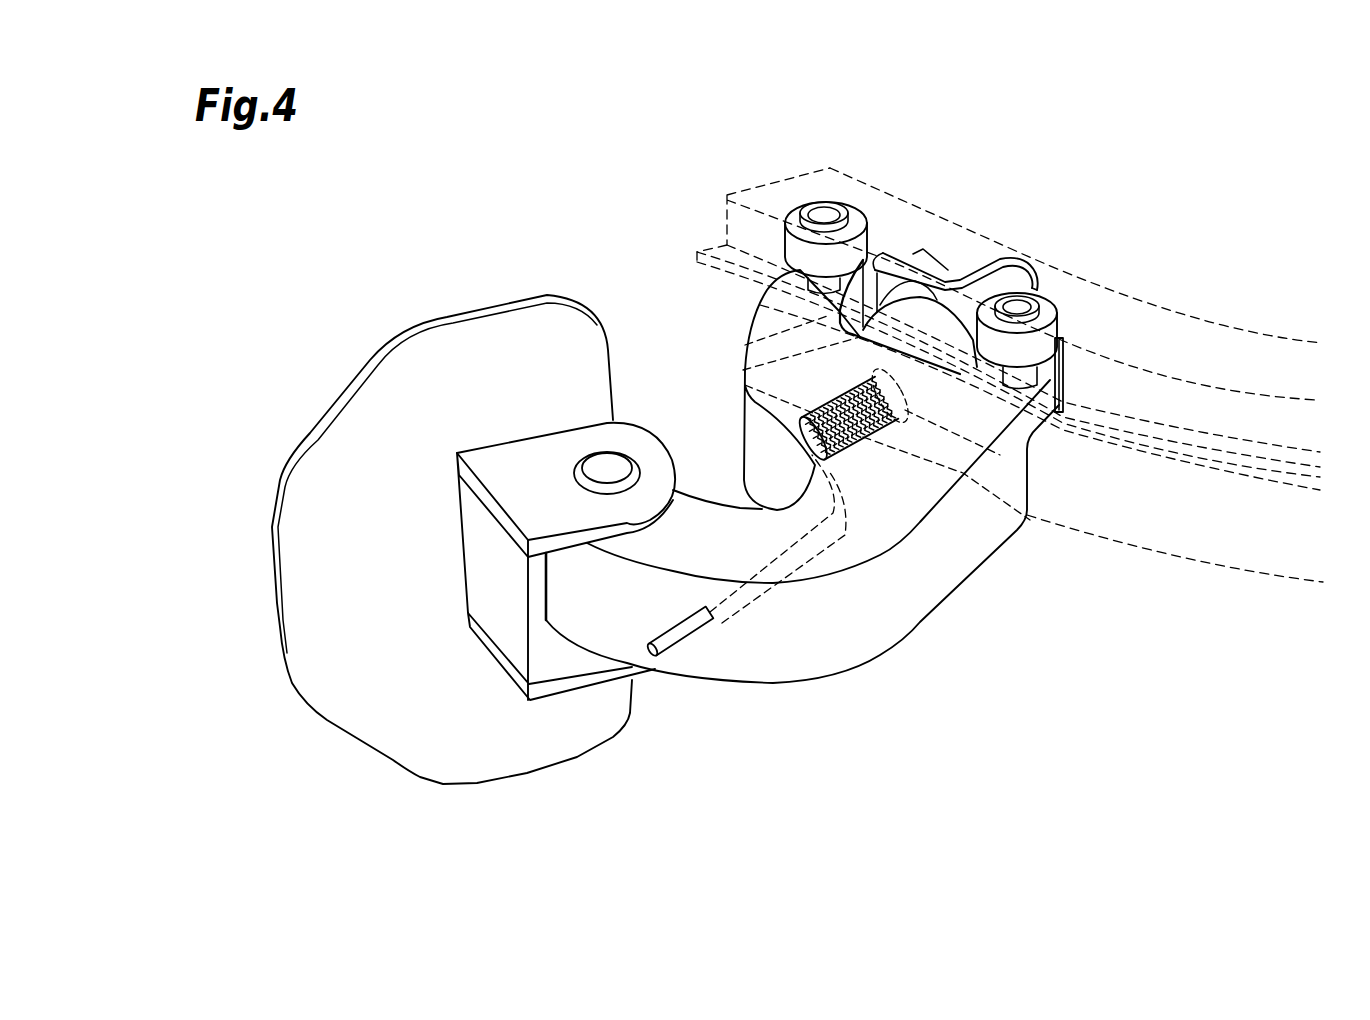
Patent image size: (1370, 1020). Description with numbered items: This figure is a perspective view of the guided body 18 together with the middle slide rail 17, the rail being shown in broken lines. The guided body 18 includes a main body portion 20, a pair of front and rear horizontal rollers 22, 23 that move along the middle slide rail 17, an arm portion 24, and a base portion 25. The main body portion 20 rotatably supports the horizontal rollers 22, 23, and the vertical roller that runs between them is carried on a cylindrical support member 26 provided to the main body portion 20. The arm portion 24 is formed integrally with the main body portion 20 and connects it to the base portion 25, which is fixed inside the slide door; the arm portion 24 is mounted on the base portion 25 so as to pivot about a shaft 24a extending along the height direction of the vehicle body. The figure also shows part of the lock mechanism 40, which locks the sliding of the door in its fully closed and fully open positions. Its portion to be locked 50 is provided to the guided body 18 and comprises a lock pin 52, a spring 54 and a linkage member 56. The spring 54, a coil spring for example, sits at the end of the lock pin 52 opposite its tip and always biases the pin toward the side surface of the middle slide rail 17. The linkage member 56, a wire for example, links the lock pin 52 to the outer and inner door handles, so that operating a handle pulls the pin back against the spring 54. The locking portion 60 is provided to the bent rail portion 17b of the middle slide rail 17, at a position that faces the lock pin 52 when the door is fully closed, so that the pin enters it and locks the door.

The middle slide rail 17 is at (1223, 330).
The bent rail portion 17b is at (788, 192).
The guided body 18 is at (593, 291).
The main body portion 20 is at (763, 343).
The front horizontal roller 22 is at (853, 220).
The rear horizontal roller 23 is at (1055, 313).
The arm portion 24 is at (758, 663).
The shaft 24a is at (607, 467).
The base portion 25 is at (493, 347).
The support member 26 is at (1030, 520).
The lock mechanism 40 is at (1068, 265).
The portion to be locked 50 is at (857, 457).
The lock pin 52 is at (970, 320).
The spring 54 is at (883, 440).
The linkage member 56 is at (683, 637).
The locking portion 60 is at (975, 263).